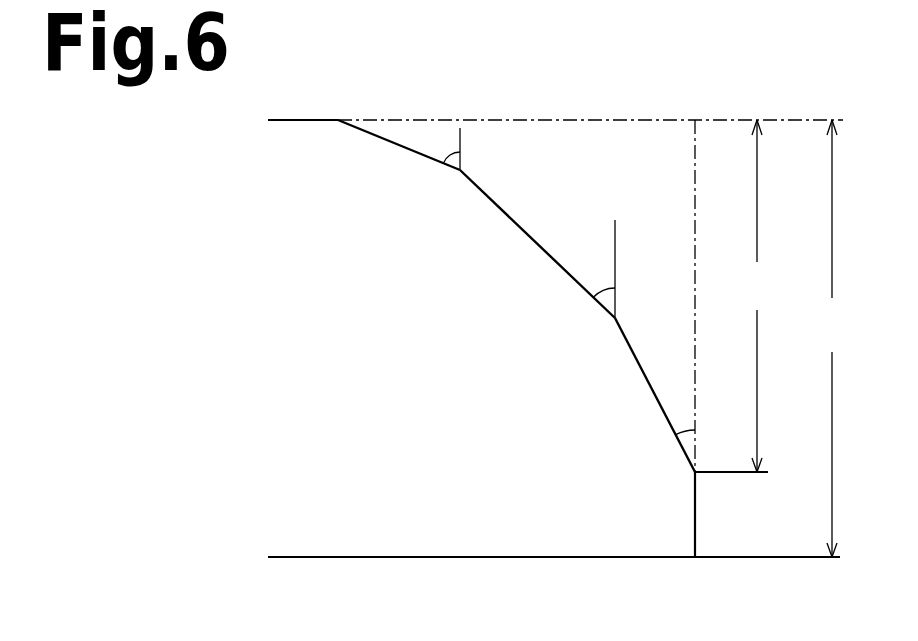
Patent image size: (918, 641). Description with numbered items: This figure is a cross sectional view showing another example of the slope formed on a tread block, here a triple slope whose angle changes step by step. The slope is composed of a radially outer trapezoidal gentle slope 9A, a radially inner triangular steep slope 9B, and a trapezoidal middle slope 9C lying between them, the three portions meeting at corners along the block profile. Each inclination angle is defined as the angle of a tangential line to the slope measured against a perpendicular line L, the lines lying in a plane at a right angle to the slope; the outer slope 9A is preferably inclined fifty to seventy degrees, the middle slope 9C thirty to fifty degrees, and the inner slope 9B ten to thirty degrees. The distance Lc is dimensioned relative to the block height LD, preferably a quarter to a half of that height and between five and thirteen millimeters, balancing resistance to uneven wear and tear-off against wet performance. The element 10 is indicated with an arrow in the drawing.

The radially outer trapezoidal gentle slope 9A is at (397, 143).
The radially inner triangular steep slope 9B is at (630, 347).
The trapezoidal middle slope 9C is at (515, 221).
The drill body 10 is at (515, 172).
The perpendicular line L is at (465, 135).
The distance Lc is at (754, 296).
The block height LD is at (830, 338).